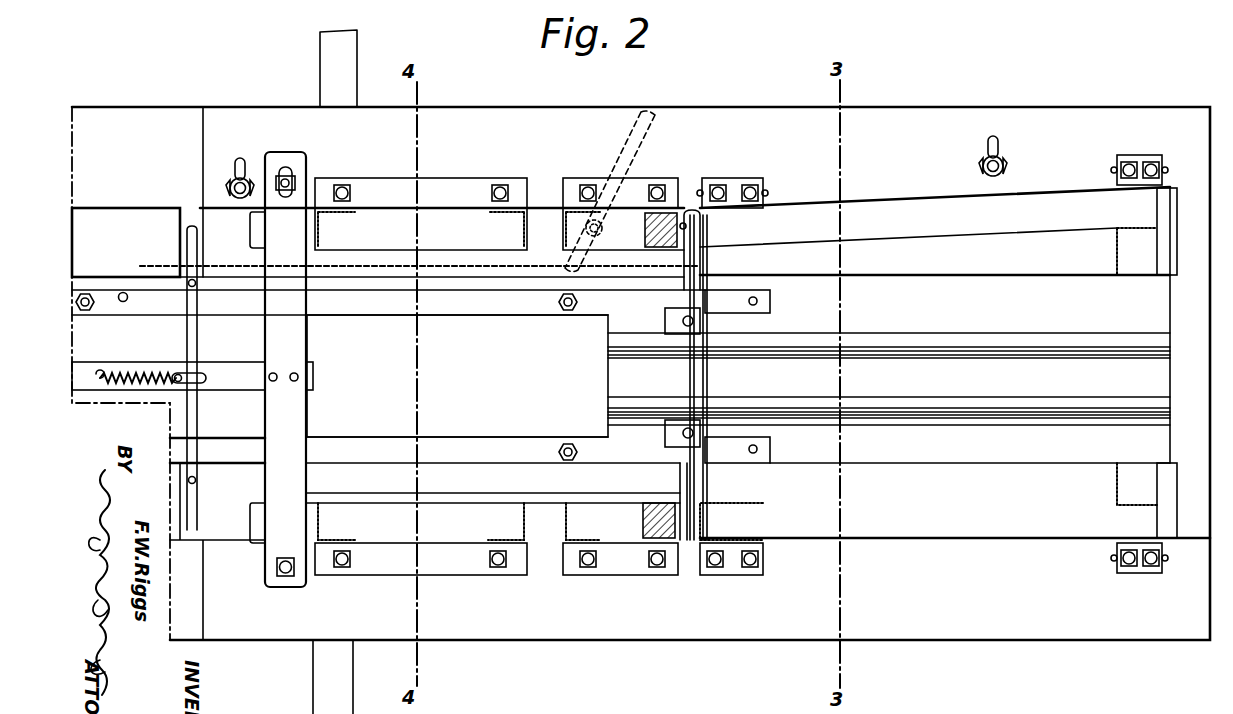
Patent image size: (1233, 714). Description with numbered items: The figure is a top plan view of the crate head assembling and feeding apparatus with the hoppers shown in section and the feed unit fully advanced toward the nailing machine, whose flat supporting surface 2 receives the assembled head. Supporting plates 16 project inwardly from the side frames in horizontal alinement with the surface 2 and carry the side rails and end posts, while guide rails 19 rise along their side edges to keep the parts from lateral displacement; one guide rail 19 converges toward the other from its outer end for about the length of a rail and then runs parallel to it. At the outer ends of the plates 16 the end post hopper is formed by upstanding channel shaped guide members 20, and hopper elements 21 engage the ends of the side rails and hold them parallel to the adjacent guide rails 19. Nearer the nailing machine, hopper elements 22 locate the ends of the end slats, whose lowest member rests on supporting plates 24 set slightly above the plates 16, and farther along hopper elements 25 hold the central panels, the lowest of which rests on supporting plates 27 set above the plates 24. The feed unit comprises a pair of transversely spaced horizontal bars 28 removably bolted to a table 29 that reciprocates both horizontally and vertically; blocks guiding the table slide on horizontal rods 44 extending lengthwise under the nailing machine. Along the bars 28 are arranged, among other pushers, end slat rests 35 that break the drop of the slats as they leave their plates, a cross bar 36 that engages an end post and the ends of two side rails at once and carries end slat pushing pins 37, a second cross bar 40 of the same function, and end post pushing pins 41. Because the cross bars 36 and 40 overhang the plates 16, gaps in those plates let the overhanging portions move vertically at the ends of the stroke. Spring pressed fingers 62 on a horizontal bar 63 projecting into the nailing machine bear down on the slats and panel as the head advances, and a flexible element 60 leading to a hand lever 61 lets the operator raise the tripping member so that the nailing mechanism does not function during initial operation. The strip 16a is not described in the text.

The flat supporting surface 2 is at (96, 222).
The supporting plates 16 is at (1064, 255).
The guide strip 16a is at (192, 215).
The guide rails 19 is at (1075, 160).
The channel shaped guide members 20 is at (1148, 250).
The hopper elements 21 is at (742, 212).
The hopper elements 22 is at (645, 232).
The supporting plates 24 is at (510, 503).
The hopper elements 25 is at (527, 233).
The supporting plates 27 is at (440, 225).
The horizontal bars 28 is at (493, 305).
The supporting platform or table 29 is at (520, 332).
The end slat rests 35 is at (121, 302).
The cross bar 36 is at (196, 414).
The end slat pushing pins 37 is at (196, 484).
The cross bar 40 is at (688, 380).
The end post pushing pins 41 is at (770, 300).
The horizontal rods 44 is at (935, 395).
The flexible element 60 is at (370, 262).
The hand lever 61 is at (645, 147).
The spring pressed fingers 62 is at (177, 374).
The horizontal bar 63 is at (222, 376).